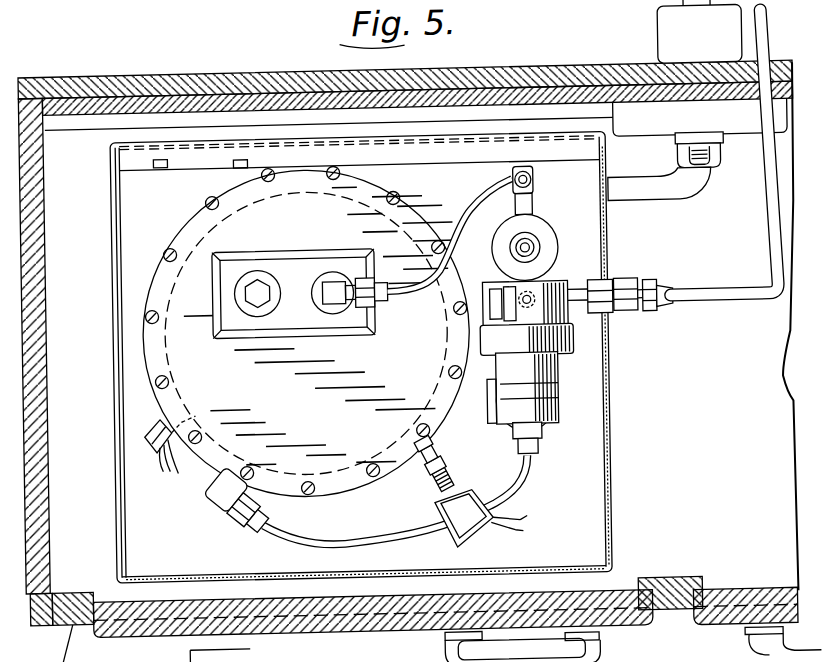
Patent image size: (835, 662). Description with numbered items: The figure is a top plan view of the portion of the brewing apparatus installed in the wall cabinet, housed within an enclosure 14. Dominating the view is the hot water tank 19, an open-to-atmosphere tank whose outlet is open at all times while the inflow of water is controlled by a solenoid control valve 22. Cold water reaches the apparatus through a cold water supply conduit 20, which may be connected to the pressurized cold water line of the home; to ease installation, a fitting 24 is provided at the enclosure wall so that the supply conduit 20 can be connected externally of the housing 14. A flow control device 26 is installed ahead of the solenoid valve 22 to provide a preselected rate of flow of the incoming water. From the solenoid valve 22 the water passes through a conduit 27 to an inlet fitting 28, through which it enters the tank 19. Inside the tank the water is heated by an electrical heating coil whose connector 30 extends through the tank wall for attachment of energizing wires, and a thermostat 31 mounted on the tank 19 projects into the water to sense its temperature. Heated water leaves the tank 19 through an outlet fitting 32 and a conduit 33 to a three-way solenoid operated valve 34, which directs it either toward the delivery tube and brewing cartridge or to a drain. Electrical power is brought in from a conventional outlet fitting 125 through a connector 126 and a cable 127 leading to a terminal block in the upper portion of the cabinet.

The enclosure 14 is at (607, 499).
The hot water tank 19 is at (346, 486).
The cold water supply conduit 20 is at (724, 317).
The solenoid control valve 22 is at (550, 417).
The fitting 24 is at (624, 322).
The flow control device 26 is at (559, 351).
The conduit 27 is at (418, 546).
The inlet fitting 28 is at (240, 535).
The connector 30 is at (156, 460).
The thermostat 31 is at (439, 475).
The outlet fitting 32 is at (365, 284).
The conduit 33 is at (481, 203).
The three-way solenoid operated valve 34 is at (554, 248).
The outlet fitting 125 is at (661, 37).
The connector 126 is at (671, 167).
The cable 127 is at (688, 200).